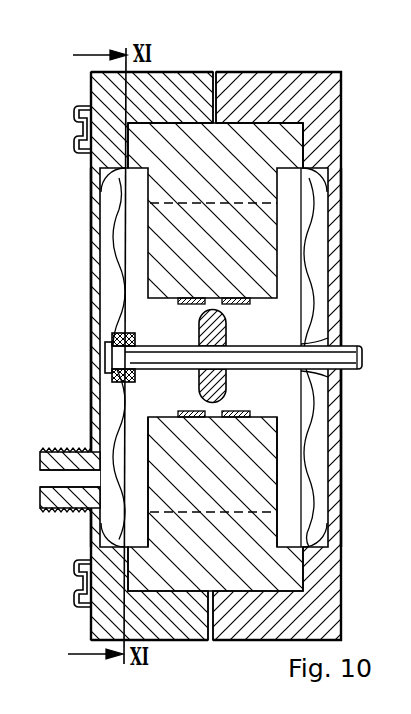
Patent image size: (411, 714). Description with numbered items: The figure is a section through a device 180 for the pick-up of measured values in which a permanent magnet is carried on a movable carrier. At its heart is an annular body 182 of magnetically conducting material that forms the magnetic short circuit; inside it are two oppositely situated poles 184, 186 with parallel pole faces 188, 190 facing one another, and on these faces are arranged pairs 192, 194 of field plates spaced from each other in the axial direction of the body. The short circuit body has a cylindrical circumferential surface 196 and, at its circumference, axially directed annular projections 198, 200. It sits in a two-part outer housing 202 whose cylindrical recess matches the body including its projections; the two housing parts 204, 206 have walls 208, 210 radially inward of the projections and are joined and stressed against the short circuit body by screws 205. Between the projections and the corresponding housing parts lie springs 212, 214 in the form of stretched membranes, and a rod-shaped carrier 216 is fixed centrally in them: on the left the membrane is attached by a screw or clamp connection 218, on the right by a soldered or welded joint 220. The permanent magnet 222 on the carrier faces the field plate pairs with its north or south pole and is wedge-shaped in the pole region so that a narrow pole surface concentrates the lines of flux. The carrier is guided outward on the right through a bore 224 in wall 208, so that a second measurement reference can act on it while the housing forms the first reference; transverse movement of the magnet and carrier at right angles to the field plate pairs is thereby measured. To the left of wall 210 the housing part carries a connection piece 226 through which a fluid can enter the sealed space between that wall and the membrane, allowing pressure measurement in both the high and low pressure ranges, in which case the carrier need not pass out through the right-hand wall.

The device for pick-up of measured values 180 is at (0, 235).
The annular body 182 is at (278, 568).
The pole 184 is at (262, 252).
The pole 186 is at (263, 451).
The pole face 188 is at (166, 300).
The pole face 190 is at (162, 416).
The pair of field plates 192 is at (255, 304).
The pair of field plates 194 is at (238, 412).
The cylindrical circumferential surface 196 is at (295, 118).
The annular projection 198 is at (300, 144).
The annular projection 200 is at (137, 143).
The outer housing 202 is at (243, 64).
The housing part 204 is at (312, 78).
The screws 205 is at (78, 106).
The housing part 206 is at (168, 77).
The wall 208 is at (340, 215).
The wall 210 is at (100, 224).
The membrane spring 212 is at (315, 280).
The membrane spring 214 is at (120, 268).
The carrier 216 is at (345, 348).
The screw or clamp connection 218 is at (107, 345).
The soldered or welded joint 220 is at (313, 376).
The permanent magnet 222 is at (199, 380).
The bore 224 is at (327, 341).
The connection piece 226 is at (43, 457).